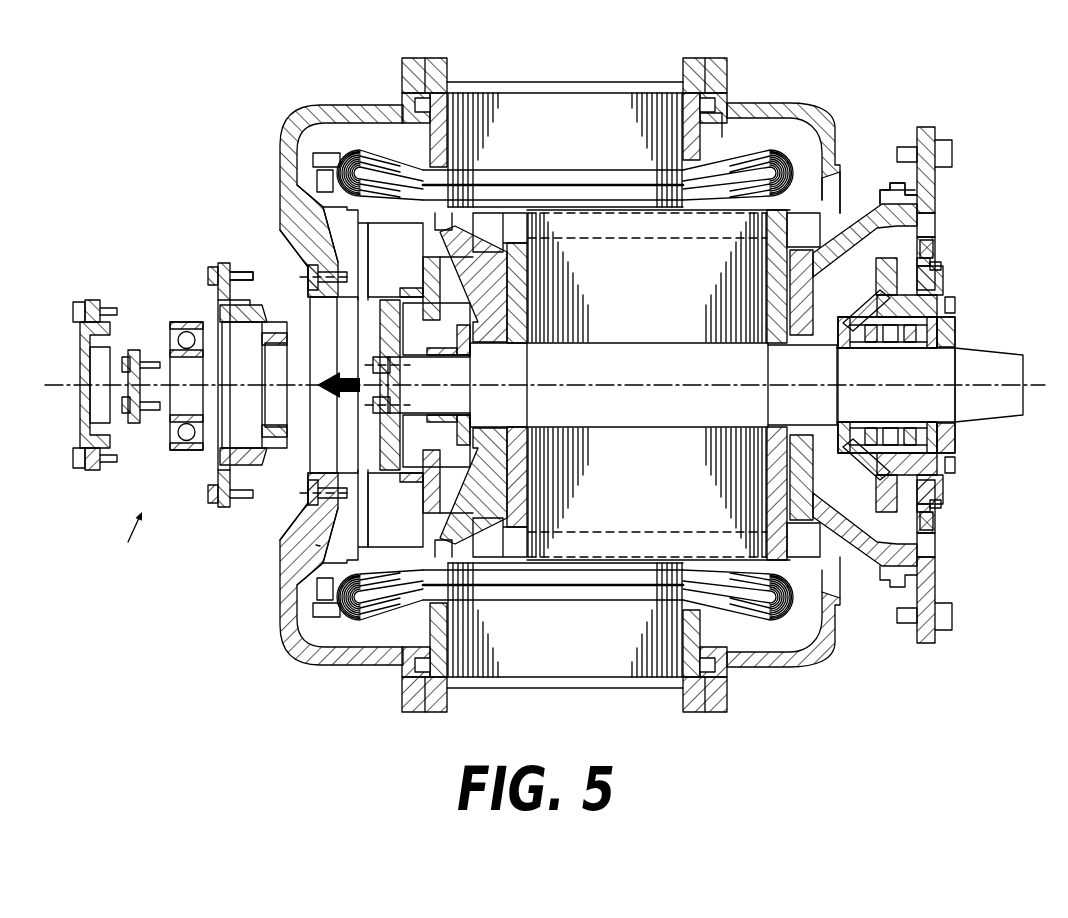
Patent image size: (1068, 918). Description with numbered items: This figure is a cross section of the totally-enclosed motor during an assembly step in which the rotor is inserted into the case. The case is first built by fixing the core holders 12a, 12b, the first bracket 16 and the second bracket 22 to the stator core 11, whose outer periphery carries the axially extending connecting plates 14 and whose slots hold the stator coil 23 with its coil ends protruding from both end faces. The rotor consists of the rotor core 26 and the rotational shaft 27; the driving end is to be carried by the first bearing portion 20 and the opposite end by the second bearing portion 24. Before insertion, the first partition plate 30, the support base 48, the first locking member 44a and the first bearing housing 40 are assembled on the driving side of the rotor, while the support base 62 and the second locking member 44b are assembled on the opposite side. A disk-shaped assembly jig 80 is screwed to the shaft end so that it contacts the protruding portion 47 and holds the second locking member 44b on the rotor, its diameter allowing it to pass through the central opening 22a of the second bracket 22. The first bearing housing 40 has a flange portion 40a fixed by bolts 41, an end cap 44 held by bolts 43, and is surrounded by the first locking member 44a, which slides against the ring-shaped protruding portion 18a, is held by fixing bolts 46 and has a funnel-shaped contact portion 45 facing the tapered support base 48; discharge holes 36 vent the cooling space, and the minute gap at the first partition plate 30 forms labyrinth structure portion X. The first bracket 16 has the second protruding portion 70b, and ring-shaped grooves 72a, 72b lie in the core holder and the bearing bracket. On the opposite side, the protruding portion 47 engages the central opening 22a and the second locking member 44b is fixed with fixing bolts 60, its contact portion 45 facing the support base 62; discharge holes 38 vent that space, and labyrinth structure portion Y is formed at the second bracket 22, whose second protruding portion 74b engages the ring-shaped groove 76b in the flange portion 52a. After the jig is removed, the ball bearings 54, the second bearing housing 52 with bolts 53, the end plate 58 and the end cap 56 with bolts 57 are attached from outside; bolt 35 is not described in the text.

The stator core 11 is at (611, 110).
The core holder 12a is at (727, 78).
The core holder 12b is at (405, 100).
The connecting plate 14 is at (555, 88).
The first bracket 16 is at (798, 112).
The ring-shaped protruding portion 18a is at (930, 252).
The first bearing portion 20 is at (962, 300).
The second bracket 22 is at (285, 142).
The central opening 22a is at (312, 472).
The stator coil 23 is at (718, 162).
The second bearing portion 24 is at (124, 538).
The rotor core 26 is at (603, 505).
The rotational shaft 27 is at (673, 412).
The first partition plate 30 is at (870, 225).
The bolt 35 is at (208, 497).
The discharge hole 36 is at (935, 225).
The discharge hole 38 is at (290, 228).
The first bearing housing 40 is at (935, 283).
The flange portion 40a is at (933, 264).
The bolt 41 is at (942, 270).
The bolt 43 is at (957, 305).
The end cap 44 is at (957, 325).
The first locking member 44a is at (877, 288).
The second locking member 44b is at (418, 290).
The contact portion 45 is at (440, 450).
The fixing bolt 46 is at (935, 252).
The protruding portion 47 is at (420, 482).
The support base 48 is at (848, 462).
The second bearing housing 52 is at (218, 305).
The flange portion 52a is at (226, 265).
The bolt 53 is at (212, 267).
The ball bearing 54 is at (182, 452).
The end cap 56 is at (82, 408).
The bolt 57 is at (76, 305).
The end plate 58 is at (134, 350).
The fixing bolt 60 is at (308, 270).
The support base 62 is at (455, 342).
The second protruding portion 70b is at (845, 170).
The ring-shaped groove 72a is at (722, 112).
The ring-shaped groove 72b is at (895, 185).
The second protruding portion 74b is at (236, 276).
The ring-shaped groove 76b is at (240, 300).
The assembly jig 80 is at (380, 440).
The labyrinth structure portion X is at (918, 190).
The labyrinth structure portion Y is at (322, 546).